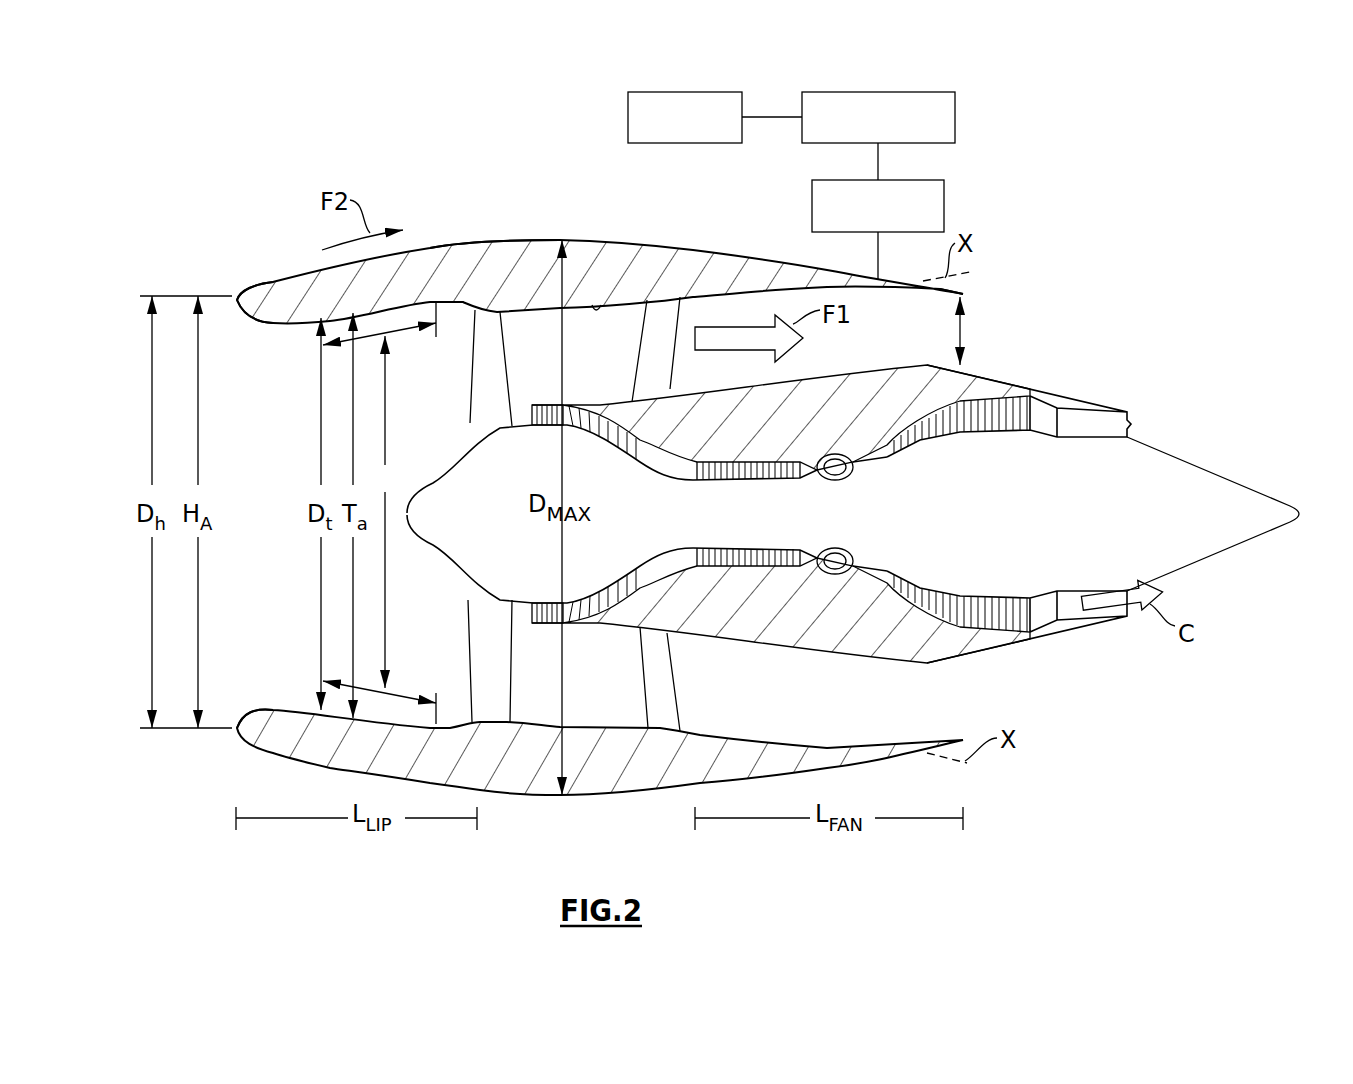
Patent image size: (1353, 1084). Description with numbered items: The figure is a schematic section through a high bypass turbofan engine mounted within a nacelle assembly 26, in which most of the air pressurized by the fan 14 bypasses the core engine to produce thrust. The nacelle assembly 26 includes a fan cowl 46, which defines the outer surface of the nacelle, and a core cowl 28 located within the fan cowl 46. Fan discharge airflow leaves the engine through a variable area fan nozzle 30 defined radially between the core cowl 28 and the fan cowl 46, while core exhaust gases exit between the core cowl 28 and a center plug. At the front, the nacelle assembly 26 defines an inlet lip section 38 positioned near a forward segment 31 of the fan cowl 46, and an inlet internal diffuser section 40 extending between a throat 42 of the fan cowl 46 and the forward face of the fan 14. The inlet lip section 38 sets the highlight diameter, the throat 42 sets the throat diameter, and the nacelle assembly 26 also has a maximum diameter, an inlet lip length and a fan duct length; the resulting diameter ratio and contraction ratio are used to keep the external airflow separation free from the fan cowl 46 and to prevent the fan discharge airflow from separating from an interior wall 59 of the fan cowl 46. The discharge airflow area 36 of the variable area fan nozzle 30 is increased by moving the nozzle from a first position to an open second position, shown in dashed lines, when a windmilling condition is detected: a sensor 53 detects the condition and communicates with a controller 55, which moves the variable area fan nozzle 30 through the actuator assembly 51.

The fan 14 is at (485, 380).
The nacelle assembly 26 is at (692, 247).
The core cowl 28 is at (1053, 390).
The variable area fan nozzle (VAFN) 30 is at (943, 297).
The forward segment 31 is at (247, 277).
The discharge airflow area 36 is at (968, 326).
The inlet lip section 38 is at (240, 296).
The inlet internal diffuser section 40 is at (387, 512).
The throat 42 is at (283, 420).
The fan cowl 46 is at (483, 238).
The actuator assembly 51 is at (944, 207).
The sensor 53 is at (628, 117).
The controller 55 is at (955, 118).
The interior wall 59 is at (598, 305).